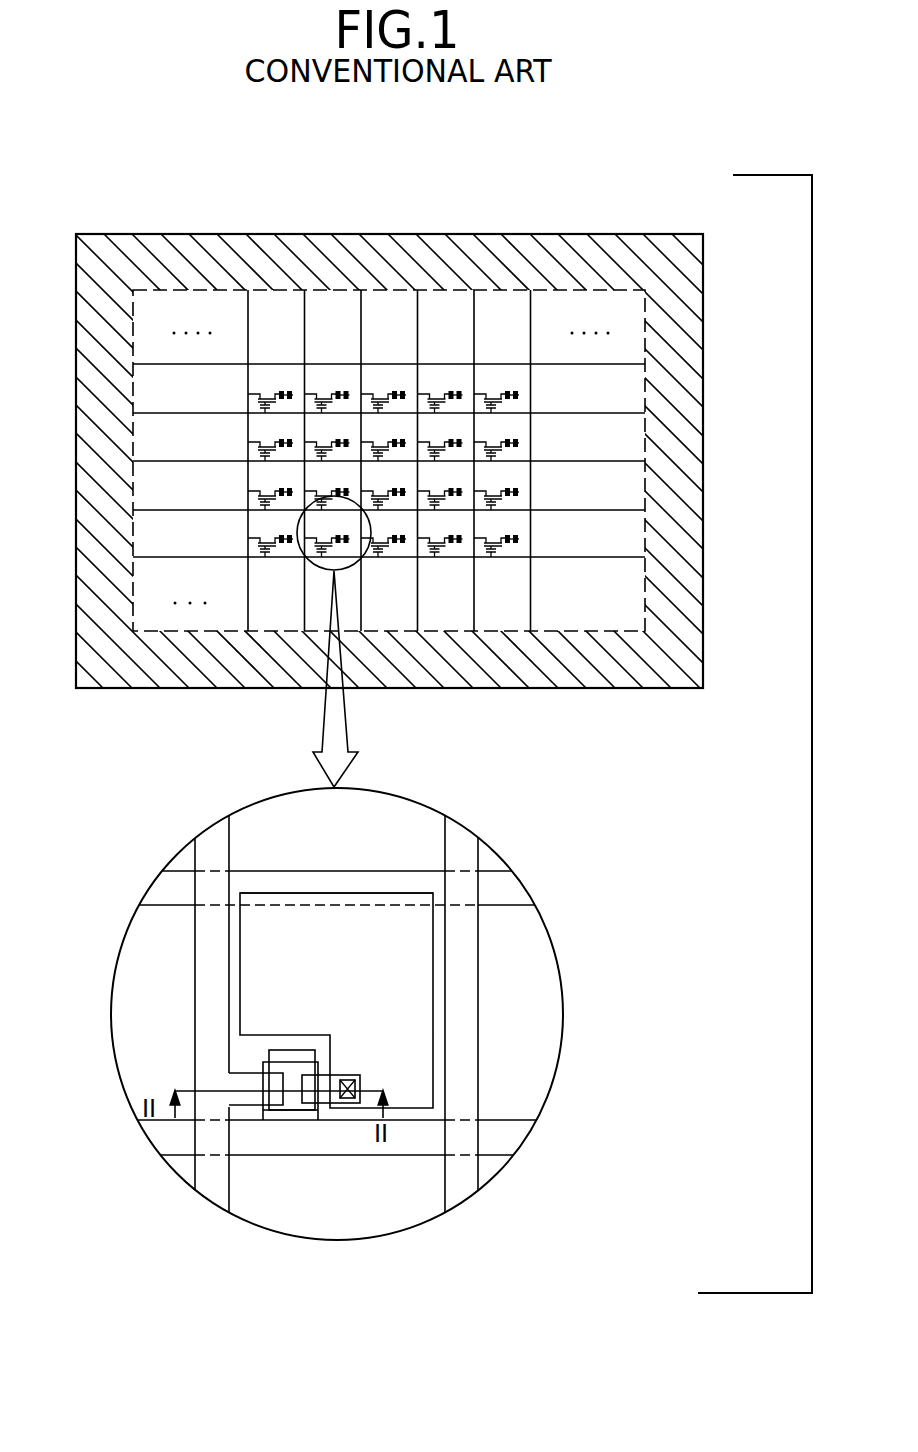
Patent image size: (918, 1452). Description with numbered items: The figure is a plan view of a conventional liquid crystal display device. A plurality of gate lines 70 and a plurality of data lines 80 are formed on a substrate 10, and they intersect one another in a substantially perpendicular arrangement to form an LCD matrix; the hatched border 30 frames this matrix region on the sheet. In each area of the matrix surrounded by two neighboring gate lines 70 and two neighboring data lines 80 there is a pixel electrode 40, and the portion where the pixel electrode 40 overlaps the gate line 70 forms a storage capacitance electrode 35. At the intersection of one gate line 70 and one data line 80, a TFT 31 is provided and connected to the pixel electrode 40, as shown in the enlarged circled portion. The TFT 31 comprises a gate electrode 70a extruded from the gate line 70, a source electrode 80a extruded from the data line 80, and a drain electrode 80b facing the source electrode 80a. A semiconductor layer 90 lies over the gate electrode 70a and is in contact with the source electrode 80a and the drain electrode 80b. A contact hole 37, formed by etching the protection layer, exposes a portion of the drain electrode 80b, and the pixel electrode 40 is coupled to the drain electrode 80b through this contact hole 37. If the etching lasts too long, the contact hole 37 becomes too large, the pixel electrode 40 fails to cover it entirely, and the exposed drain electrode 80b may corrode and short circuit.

The substrate 10 is at (704, 461).
The black matrix frame 30 is at (388, 234).
The gate line 70 is at (179, 557).
The data line 80 is at (536, 596).
The storage capacitance electrode 35 is at (340, 893).
The pixel electrode 40 is at (430, 1055).
The gate electrode 70a is at (292, 1120).
The semiconductor layer 90 is at (290, 1050).
The TFT 31 is at (268, 1105).
The source electrode 80a is at (242, 1082).
The drain electrode 80b is at (317, 1074).
The contact hole 37 is at (347, 1077).